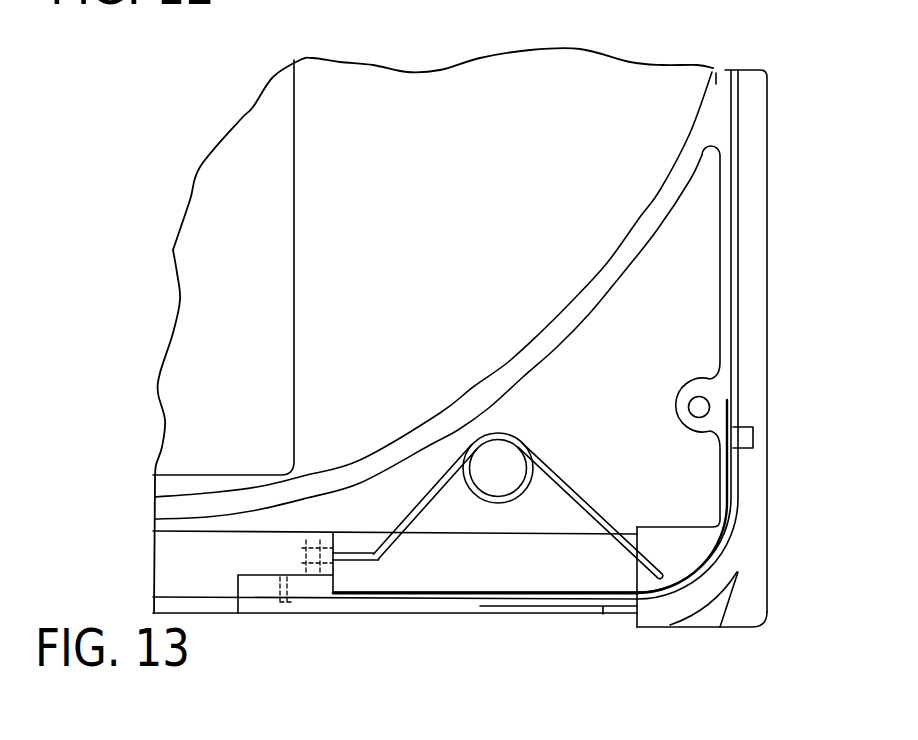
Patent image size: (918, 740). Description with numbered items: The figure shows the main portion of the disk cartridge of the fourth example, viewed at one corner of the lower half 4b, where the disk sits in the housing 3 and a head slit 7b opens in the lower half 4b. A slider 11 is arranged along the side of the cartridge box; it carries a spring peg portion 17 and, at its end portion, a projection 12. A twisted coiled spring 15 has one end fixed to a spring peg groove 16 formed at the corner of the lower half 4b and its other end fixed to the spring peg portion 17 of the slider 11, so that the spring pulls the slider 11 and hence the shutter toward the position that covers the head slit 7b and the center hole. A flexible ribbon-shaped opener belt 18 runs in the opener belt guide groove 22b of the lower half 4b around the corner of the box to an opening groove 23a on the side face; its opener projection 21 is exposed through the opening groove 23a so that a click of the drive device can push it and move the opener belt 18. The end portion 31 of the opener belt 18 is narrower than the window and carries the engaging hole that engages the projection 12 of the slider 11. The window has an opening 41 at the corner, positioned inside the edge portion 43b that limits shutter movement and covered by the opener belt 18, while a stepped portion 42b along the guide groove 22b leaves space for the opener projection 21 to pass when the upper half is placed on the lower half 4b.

The housing 3 is at (600, 72).
The lower half 4b is at (718, 72).
The head slit 7b is at (298, 188).
The opener belt guide groove 22b is at (736, 273).
The opener projection 21 is at (754, 438).
The twisted coiled spring 15 is at (546, 464).
The spring peg groove 16 is at (642, 538).
The spring peg portion 17 is at (332, 550).
The opening groove 23a is at (754, 556).
The slider 11 is at (167, 563).
The projection 12 is at (287, 603).
The end portion 31 is at (261, 585).
The opener belt 18 is at (417, 598).
The opening 41 is at (603, 607).
The edge portion 43b is at (621, 617).
The stepped portion 42b is at (660, 612).